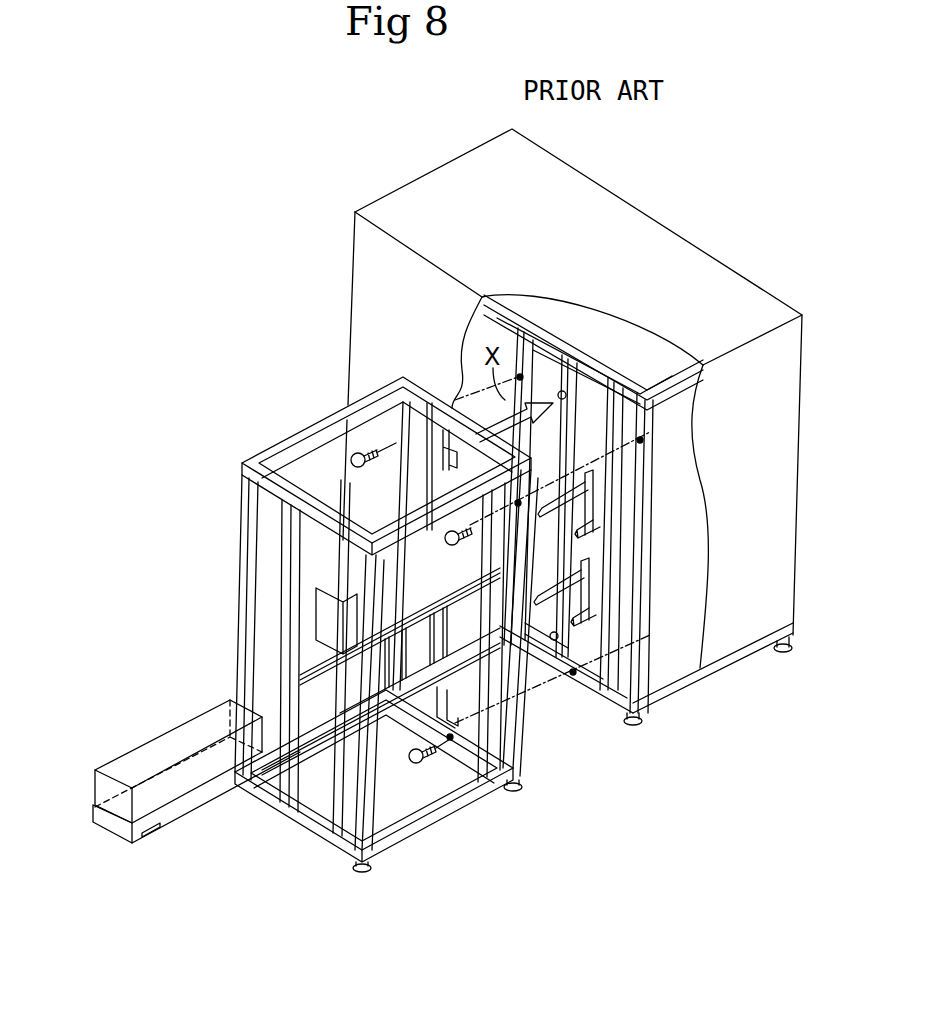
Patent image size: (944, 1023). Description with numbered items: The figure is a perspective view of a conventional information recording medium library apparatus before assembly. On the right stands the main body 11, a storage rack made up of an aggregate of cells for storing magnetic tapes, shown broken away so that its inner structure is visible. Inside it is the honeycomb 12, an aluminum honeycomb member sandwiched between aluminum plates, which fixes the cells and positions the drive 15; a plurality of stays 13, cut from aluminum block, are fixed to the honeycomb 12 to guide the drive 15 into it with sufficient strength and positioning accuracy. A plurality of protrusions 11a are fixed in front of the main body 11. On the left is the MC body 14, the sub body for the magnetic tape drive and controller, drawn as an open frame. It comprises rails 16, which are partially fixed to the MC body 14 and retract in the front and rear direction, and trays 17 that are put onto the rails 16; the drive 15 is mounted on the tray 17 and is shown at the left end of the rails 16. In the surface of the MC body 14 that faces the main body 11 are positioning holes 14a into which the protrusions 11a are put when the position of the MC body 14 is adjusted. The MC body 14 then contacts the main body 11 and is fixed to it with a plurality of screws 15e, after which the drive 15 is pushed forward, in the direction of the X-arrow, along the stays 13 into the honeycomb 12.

The main body 11 is at (680, 693).
The protrusions 11a is at (557, 393).
The honeycomb 12 is at (587, 395).
The stays 13 is at (590, 490).
The MC body 14 is at (348, 412).
The positioning holes 14a is at (440, 420).
The drive 15 is at (148, 738).
The screws 15e is at (348, 453).
The rails 16 is at (297, 768).
The trays 17 is at (110, 833).